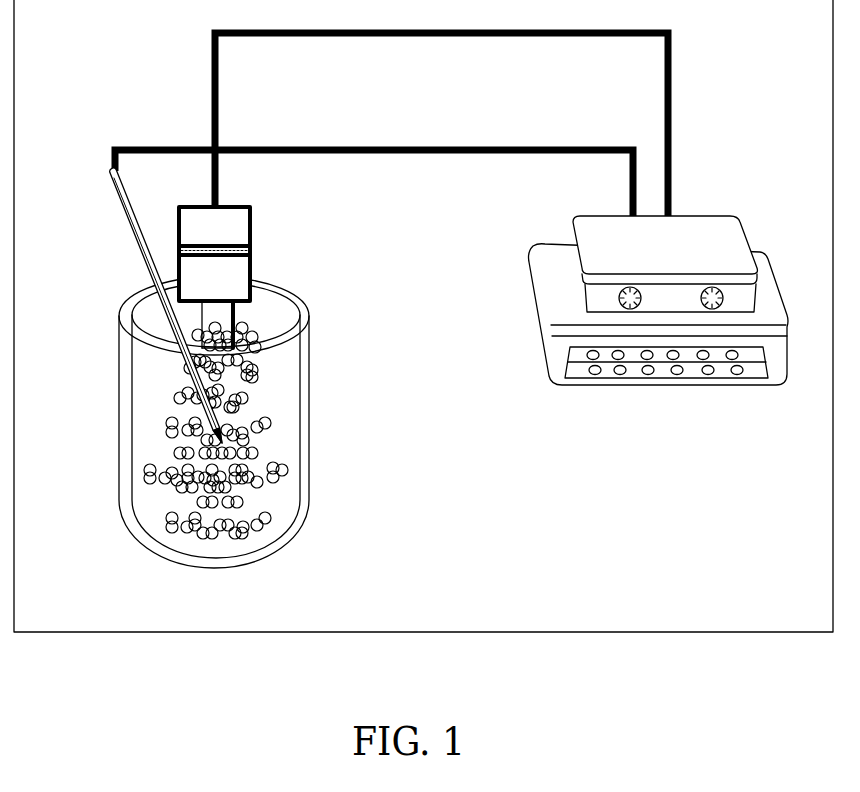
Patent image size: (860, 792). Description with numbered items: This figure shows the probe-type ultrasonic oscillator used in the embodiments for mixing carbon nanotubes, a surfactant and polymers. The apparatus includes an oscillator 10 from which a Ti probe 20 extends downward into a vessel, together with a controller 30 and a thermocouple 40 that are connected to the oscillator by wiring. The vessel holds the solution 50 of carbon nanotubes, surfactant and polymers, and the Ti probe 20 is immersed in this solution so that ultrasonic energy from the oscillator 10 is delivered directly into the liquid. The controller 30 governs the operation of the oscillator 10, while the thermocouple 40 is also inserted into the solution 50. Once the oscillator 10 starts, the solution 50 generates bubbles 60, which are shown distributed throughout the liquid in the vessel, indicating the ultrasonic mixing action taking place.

The oscillator 10 is at (251, 250).
The Ti probe 20 is at (237, 319).
The controller 30 is at (117, 192).
The thermocouple 40 is at (610, 382).
The solution 50 is at (142, 379).
The bubbles 60 is at (258, 372).